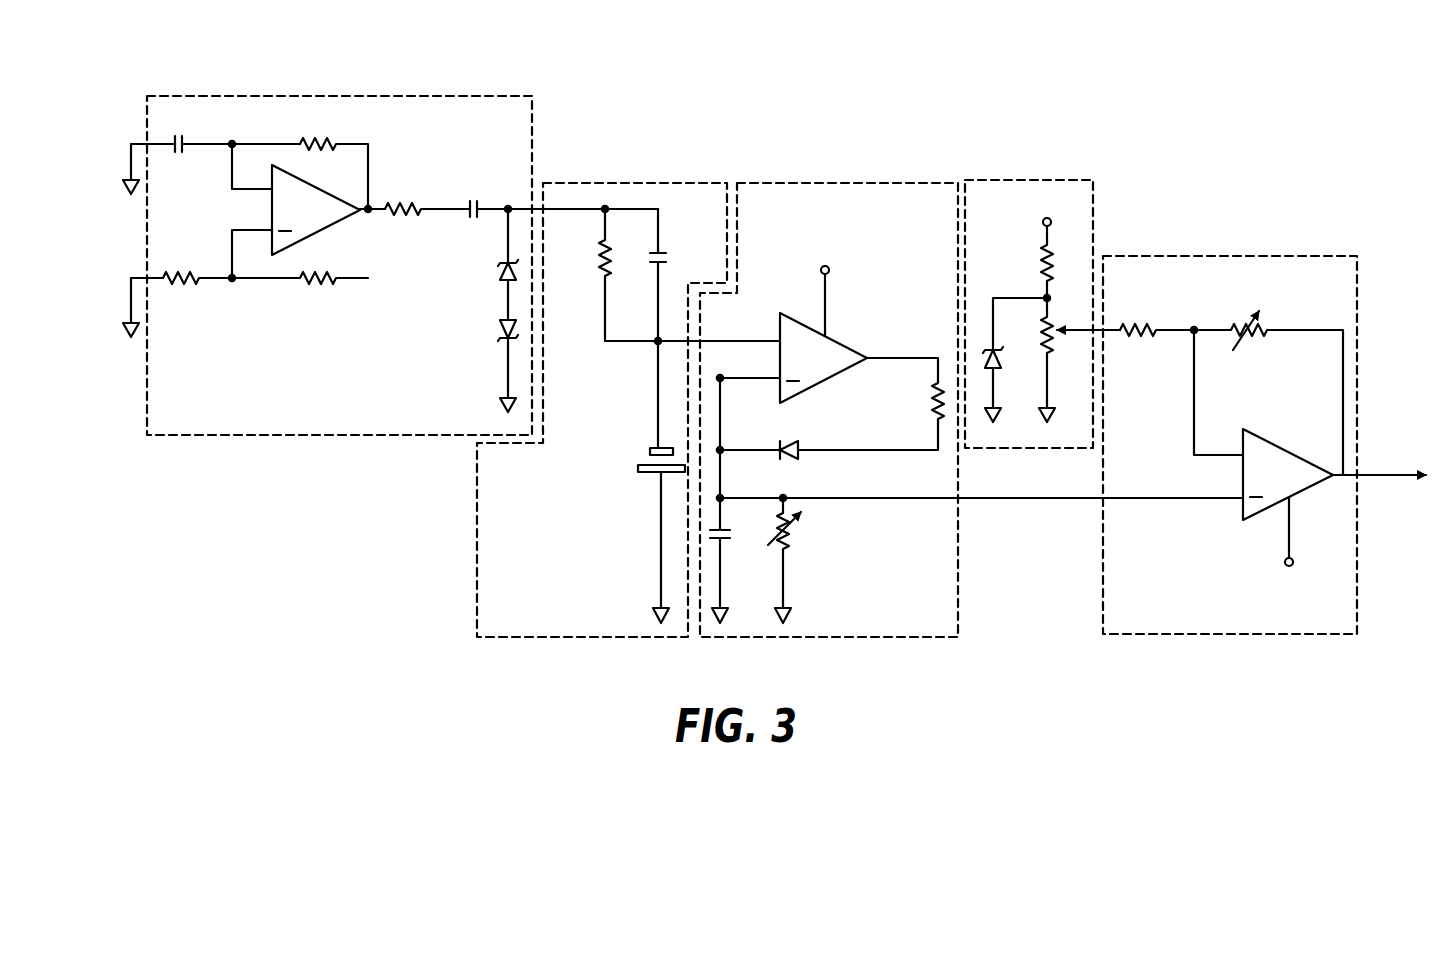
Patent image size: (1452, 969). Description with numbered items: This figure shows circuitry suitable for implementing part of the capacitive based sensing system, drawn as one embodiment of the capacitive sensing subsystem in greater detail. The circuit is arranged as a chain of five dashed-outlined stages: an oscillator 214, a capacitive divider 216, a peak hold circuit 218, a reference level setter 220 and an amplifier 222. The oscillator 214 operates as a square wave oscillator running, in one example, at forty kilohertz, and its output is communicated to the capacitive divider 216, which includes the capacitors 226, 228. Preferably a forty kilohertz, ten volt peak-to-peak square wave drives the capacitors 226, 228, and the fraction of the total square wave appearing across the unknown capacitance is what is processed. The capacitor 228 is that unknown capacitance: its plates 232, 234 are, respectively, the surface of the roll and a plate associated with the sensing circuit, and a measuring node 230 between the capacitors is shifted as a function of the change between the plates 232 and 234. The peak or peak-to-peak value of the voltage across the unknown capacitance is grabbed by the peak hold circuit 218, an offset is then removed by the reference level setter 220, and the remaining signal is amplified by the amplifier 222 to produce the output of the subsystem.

The oscillator 214 is at (390, 238).
The capacitive divider 216 is at (634, 384).
The peak hold circuit 218 is at (971, 384).
The reference level setter 220 is at (1046, 288).
The amplifier 222 is at (1271, 418).
The capacitor 226 is at (668, 275).
The capacitor 228 is at (642, 518).
The measuring node 230 is at (692, 393).
The plate 232 is at (627, 438).
The plate 234 is at (649, 544).